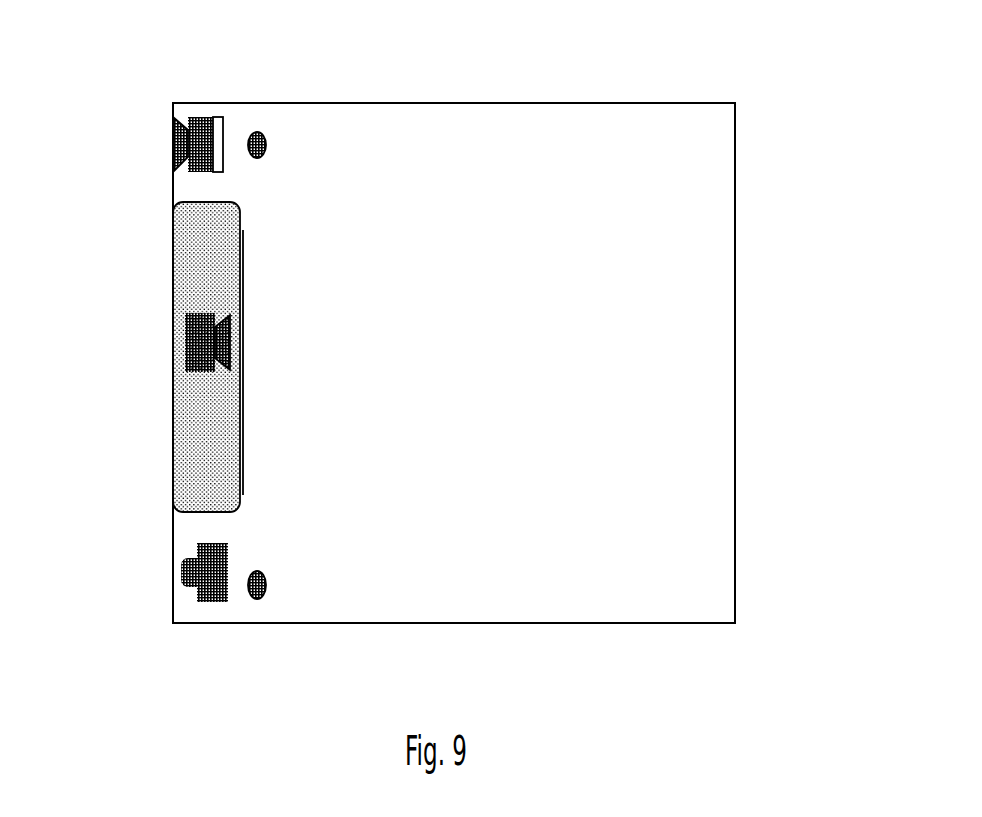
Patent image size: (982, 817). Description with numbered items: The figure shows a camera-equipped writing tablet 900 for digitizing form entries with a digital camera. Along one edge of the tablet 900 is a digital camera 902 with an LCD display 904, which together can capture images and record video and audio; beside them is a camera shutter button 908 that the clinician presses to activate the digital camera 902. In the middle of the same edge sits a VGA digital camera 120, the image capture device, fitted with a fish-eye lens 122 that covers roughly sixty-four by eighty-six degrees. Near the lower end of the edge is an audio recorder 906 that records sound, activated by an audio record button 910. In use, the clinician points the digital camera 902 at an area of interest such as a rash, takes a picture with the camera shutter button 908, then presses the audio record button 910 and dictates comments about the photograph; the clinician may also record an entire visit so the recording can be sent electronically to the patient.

The camera-equipped writing tablet 900 is at (786, 174).
The digital camera 902 is at (172, 151).
The LCD display 904 is at (226, 128).
The camera shutter button 908 is at (266, 138).
The VGA digital camera 120 is at (200, 352).
The fish-eye lens 122 is at (227, 364).
The audio recorder 906 is at (181, 568).
The audio record button 910 is at (252, 599).